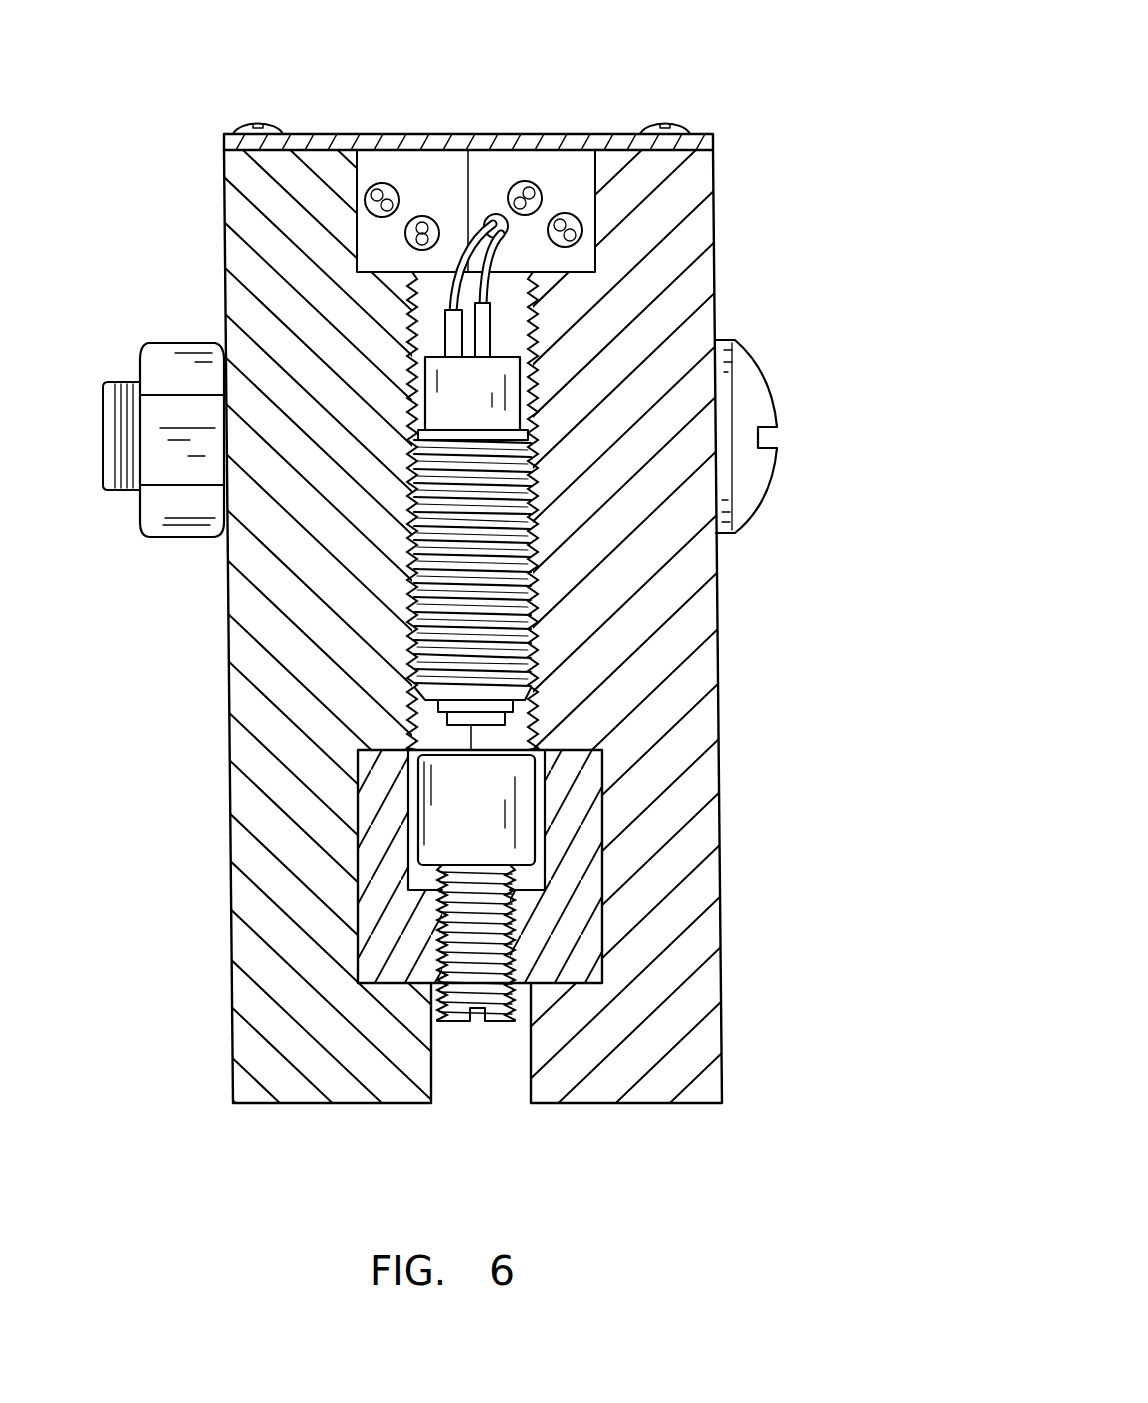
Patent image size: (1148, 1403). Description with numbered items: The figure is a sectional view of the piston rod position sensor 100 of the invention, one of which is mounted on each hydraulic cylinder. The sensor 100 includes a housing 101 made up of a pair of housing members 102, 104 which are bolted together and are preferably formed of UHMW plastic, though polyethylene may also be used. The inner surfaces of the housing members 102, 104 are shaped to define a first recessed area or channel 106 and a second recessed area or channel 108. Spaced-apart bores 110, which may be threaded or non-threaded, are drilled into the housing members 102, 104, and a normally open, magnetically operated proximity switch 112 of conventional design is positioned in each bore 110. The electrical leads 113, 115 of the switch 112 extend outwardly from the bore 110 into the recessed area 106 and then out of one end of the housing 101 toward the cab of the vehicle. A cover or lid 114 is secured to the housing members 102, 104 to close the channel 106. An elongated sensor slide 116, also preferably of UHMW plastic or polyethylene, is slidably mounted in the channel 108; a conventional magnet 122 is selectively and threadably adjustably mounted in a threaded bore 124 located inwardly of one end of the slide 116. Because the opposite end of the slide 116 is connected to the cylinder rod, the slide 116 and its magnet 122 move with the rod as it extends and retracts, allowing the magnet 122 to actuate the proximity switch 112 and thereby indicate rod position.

The piston rod position sensor 100 is at (758, 108).
The housing 101 is at (233, 1026).
The housing member 102 is at (226, 636).
The housing member 104 is at (700, 666).
The first recessed area or channel 106 is at (512, 166).
The second recessed area or channel 108 is at (368, 858).
The bore 110 is at (510, 327).
The proximity switch 112 is at (420, 597).
The electrical lead 113 is at (455, 283).
The cover or lid 114 is at (414, 133).
The electrical lead 115 is at (545, 282).
The sensor slide 116 is at (590, 885).
The magnet 122 is at (512, 810).
The threaded bore 124 is at (505, 945).